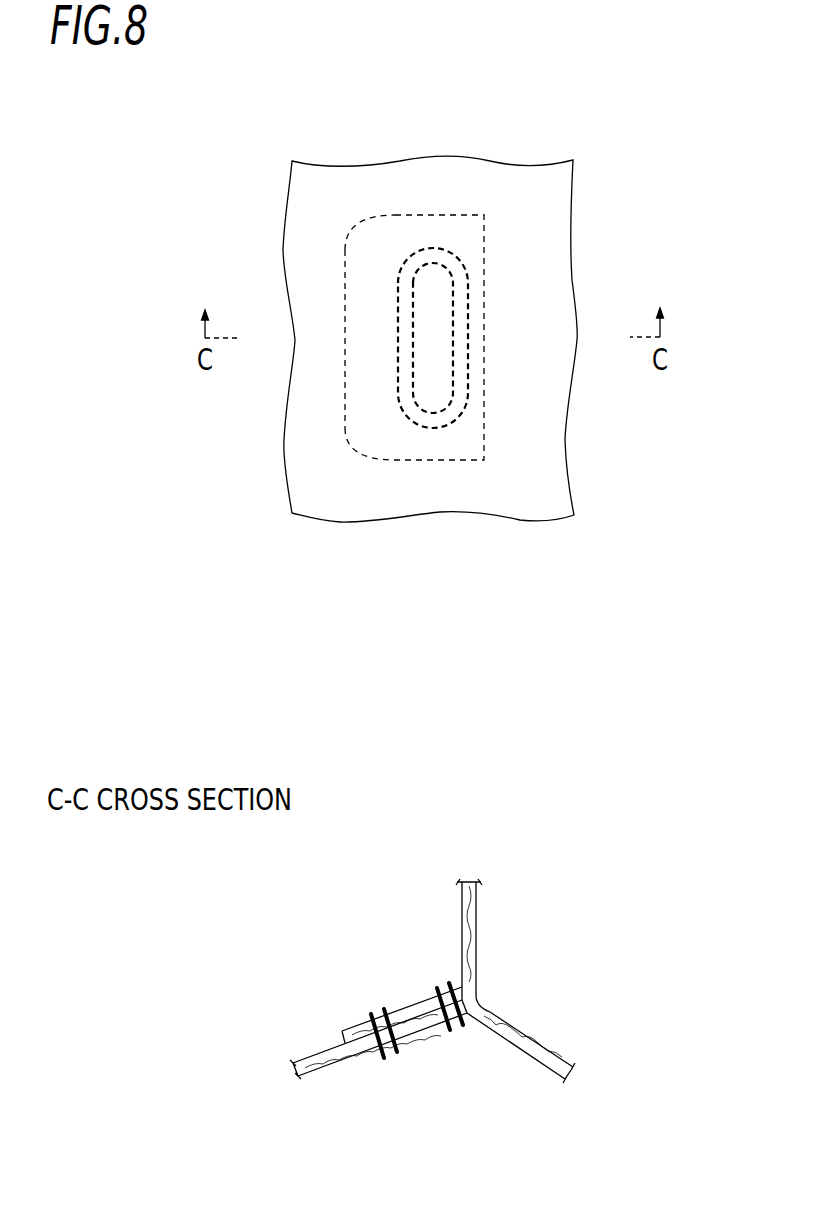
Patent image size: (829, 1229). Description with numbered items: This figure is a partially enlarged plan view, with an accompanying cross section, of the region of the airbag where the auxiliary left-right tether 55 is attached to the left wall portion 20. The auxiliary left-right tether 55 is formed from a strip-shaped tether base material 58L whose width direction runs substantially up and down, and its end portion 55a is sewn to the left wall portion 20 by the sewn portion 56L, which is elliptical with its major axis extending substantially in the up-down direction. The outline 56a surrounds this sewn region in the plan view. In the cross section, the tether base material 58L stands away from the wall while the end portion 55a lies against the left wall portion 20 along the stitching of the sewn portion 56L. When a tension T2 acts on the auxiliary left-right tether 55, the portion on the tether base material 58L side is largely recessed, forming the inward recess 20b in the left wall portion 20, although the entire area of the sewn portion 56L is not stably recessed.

The left wall portion 20 is at (542, 207).
The recess 20b is at (487, 1068).
The auxiliary left-right tether 55 is at (455, 182).
The end portion 55a is at (387, 440).
The outer periphery of slot 56a is at (468, 325).
The sewn portion 56L is at (437, 452).
The tether base material 58L is at (462, 938).
The tension T2 is at (489, 938).